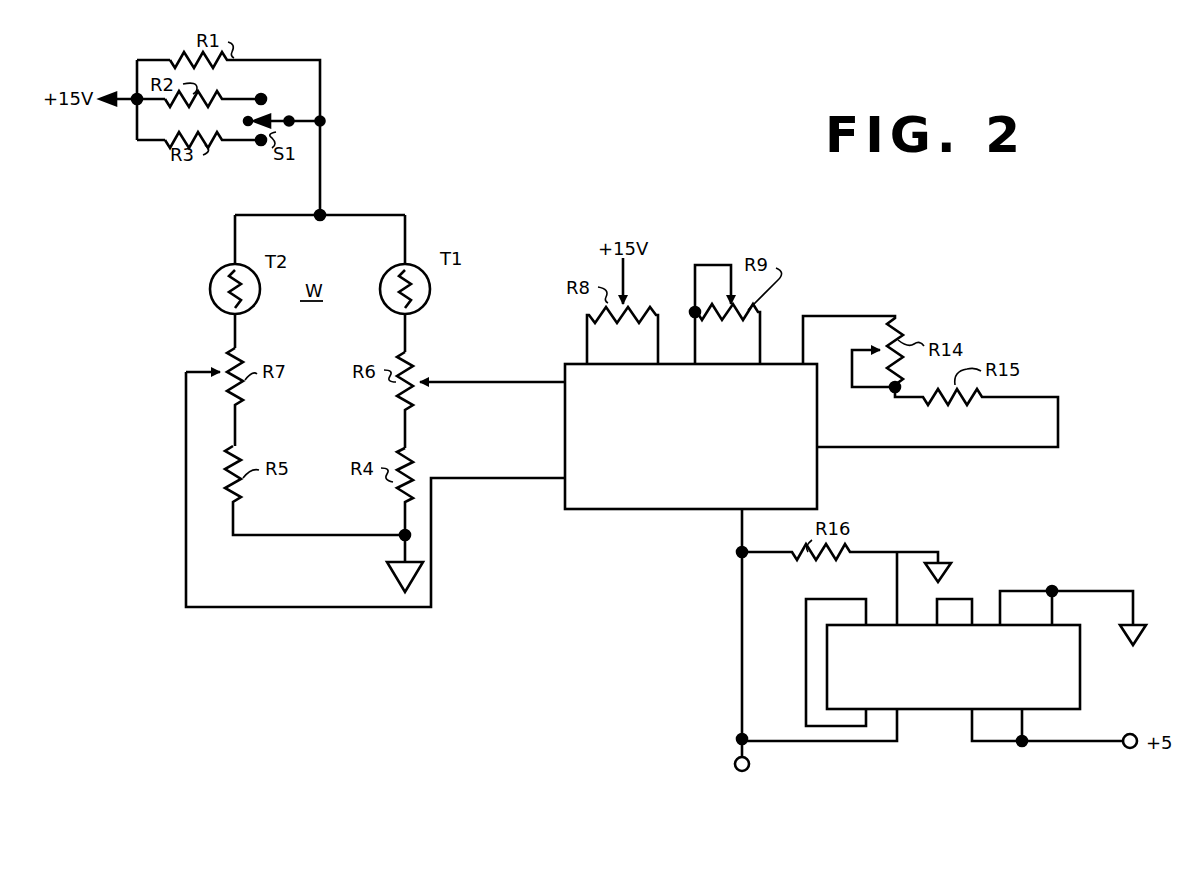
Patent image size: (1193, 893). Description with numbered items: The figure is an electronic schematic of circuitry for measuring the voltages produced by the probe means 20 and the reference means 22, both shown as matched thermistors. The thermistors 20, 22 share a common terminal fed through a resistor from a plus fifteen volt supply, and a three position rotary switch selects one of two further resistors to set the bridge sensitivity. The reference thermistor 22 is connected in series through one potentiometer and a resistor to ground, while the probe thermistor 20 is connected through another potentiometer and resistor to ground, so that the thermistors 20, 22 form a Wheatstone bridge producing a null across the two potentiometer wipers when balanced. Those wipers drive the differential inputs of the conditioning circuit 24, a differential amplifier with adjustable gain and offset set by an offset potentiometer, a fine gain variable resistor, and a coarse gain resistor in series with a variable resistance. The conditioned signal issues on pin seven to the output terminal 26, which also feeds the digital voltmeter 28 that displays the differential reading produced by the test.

The probe means 20 is at (430, 290).
The reference means 22 is at (212, 282).
The conditioning circuit 24 is at (607, 512).
The output terminal 26 is at (749, 768).
The digital voltmeter 28 is at (1083, 668).